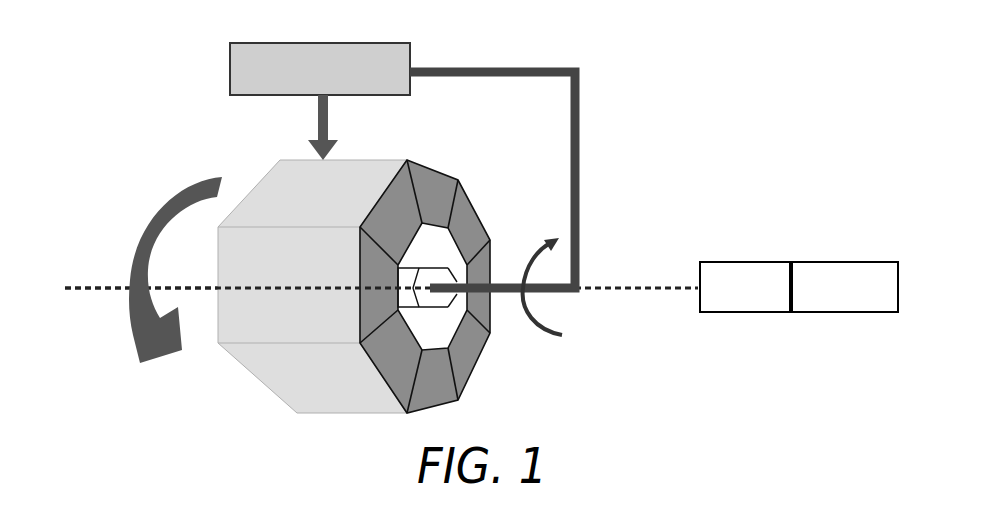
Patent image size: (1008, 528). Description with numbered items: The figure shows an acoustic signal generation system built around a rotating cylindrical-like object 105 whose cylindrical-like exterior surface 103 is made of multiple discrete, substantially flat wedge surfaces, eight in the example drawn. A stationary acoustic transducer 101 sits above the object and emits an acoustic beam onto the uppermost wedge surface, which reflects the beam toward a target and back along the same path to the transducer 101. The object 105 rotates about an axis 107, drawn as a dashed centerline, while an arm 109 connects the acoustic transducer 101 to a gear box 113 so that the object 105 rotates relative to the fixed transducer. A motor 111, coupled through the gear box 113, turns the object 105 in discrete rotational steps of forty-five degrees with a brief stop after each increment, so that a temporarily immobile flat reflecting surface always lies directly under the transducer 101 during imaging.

The acoustic transducer 101 is at (287, 43).
The cylindrical-like exterior surface 103 is at (333, 395).
The cylindrical-like object 105 is at (240, 377).
The axis 107 is at (110, 285).
The arm 109 is at (577, 165).
The motor 111 is at (835, 262).
The gear box 113 is at (768, 262).